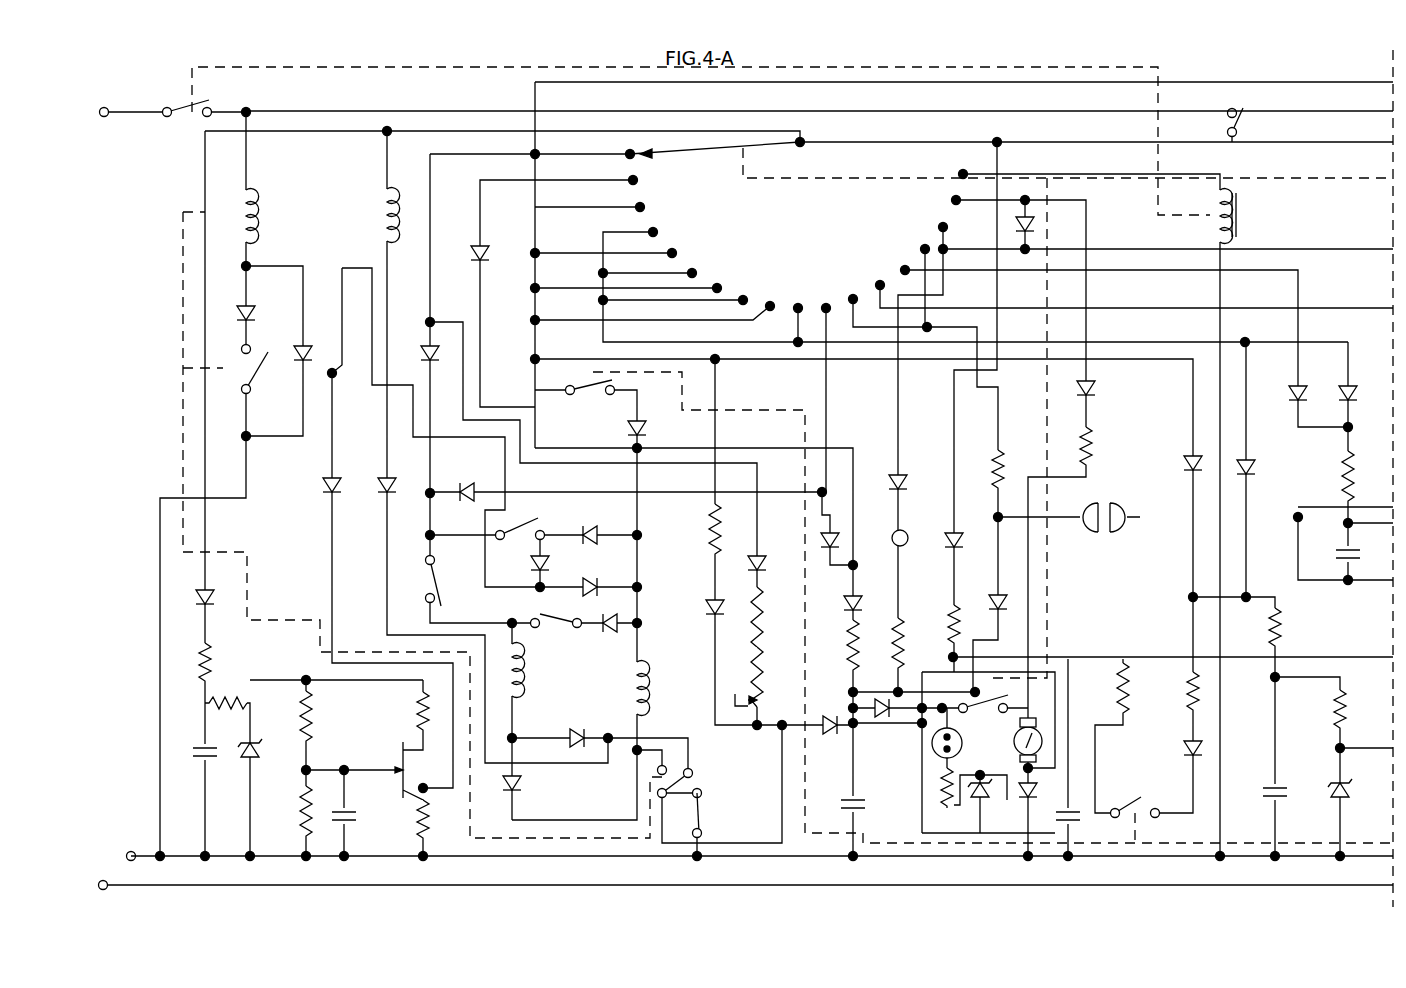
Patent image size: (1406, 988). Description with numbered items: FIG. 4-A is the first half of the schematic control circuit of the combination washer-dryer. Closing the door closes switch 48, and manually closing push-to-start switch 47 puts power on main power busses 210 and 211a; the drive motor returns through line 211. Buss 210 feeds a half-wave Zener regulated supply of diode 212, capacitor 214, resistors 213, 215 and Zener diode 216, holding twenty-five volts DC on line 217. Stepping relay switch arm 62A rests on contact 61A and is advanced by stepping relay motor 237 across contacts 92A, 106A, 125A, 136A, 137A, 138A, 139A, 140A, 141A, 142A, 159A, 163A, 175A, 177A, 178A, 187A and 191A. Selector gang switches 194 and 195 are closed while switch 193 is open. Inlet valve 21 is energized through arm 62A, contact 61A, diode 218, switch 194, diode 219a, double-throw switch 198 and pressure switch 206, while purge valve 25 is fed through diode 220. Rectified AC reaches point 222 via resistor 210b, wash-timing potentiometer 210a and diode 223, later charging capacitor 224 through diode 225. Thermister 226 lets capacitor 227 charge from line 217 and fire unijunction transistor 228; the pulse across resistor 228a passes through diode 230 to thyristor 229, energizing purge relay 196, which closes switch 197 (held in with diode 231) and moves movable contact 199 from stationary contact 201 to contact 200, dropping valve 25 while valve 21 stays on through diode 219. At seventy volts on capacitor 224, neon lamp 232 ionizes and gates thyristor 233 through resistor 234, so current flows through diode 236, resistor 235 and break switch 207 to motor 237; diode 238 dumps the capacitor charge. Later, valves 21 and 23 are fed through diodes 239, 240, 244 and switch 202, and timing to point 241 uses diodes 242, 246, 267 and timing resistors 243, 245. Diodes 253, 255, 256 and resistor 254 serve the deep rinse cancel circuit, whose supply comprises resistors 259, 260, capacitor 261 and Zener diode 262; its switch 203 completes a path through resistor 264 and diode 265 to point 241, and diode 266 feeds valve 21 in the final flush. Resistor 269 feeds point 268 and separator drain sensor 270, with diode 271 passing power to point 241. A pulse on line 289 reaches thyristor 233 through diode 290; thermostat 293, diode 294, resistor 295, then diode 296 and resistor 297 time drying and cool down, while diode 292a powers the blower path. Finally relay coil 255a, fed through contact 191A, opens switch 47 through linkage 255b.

The push-to-start switch 47 is at (175, 101).
The door switch 48 is at (1215, 125).
The inlet valve 21 is at (509, 681).
The inlet valve 23 is at (655, 680).
The purge valve 25 is at (375, 200).
The contact 61A is at (693, 146).
The stepping relay switch arm 62A is at (758, 150).
The contact 92A is at (652, 169).
The contact 106A is at (663, 191).
The contact 125A is at (673, 215).
The contact 136A is at (689, 234).
The contact 137A is at (706, 253).
The contact 138A is at (729, 268).
The contact 139A is at (753, 280).
The contact 140A is at (778, 285).
The contact 141A is at (802, 282).
The contact 142A is at (831, 282).
The contact 159A is at (858, 273).
The contact 163A is at (866, 260).
The contact 175A is at (889, 246).
The switch contact 177A is at (908, 227).
The contact 178A is at (923, 206).
The contact 187A is at (932, 186).
The contact 191A is at (939, 166).
The switch 193 is at (547, 549).
The switch 194 is at (418, 581).
The switch 195 is at (542, 611).
The purge relay 196 is at (233, 200).
The relay-operated switch 197 is at (262, 370).
The single-pole, double-throw relay operated switch 198 is at (721, 786).
The movable contact 199 is at (641, 798).
The contact 200 is at (628, 780).
The stationary contact 201 is at (710, 766).
The switch 202 is at (590, 399).
The switch 203 is at (1133, 796).
The pressure switch 206 is at (718, 815).
The stepping relay break switch 207 is at (984, 715).
The main power buss 210 is at (932, 140).
The wash-timing potentiometer 210a is at (779, 673).
The resistor 210b is at (779, 612).
The line 211 is at (580, 860).
The main power buss 211a is at (385, 111).
The diode 212 is at (190, 581).
The resistor 213 is at (189, 650).
The capacitor 214 is at (192, 737).
The resistor 215 is at (229, 687).
The Zener diode 216 is at (235, 766).
The line 217 is at (336, 666).
The diode 218 is at (414, 342).
The diode 219 is at (537, 783).
The diode 219a is at (557, 718).
The diode 220 is at (369, 468).
The point 222 is at (741, 725).
The diode 223 is at (773, 548).
The capacitor 224 is at (838, 791).
The diode 225 is at (891, 695).
The negative temperature coefficient thermister 226 is at (327, 765).
The capacitor 227 is at (359, 826).
The unijunction transistor 228 is at (390, 732).
The resistor 228a is at (430, 858).
The thyristor 229 is at (287, 341).
The diode 230 is at (322, 490).
The diode 231 is at (232, 297).
The neon lamp 232 is at (914, 752).
The thyristor 233 is at (1012, 808).
The resistor 234 is at (914, 788).
The resistor 235 is at (933, 617).
The diode 236 is at (934, 524).
The stepping relay motor 237 is at (1006, 742).
The diode 238 is at (881, 725).
The diode 239 is at (497, 237).
The diode 240 is at (606, 637).
The point 241 is at (828, 741).
The diode 242 is at (837, 592).
The timing resistor 243 is at (836, 645).
The diode 244 is at (606, 428).
The timing resistor 245 is at (688, 531).
The diode 246 is at (695, 593).
The diode 253 is at (1364, 377).
The resistor 254 is at (1340, 470).
The diode 255 is at (1182, 463).
The relay coil 255a is at (1253, 216).
The linkage 255b is at (260, 66).
The diode 256 is at (1255, 470).
The resistor 259 is at (1282, 632).
The resistor 260 is at (1333, 718).
The capacitor 261 is at (1268, 786).
The Zener diode 262 is at (1330, 786).
The resistor 264 is at (1169, 703).
The diode 265 is at (1183, 750).
The diode 266 is at (466, 475).
The diode 267 is at (857, 528).
The point 268 is at (1019, 506).
The resistor 269 is at (981, 457).
The separator drain sensor 270 is at (1110, 528).
The diode 271 is at (982, 587).
The line 289 is at (980, 835).
The diode 290 is at (962, 806).
The diode 292a is at (1036, 227).
The thermostat 293 is at (884, 548).
The diode 294 is at (882, 467).
The resistor 295 is at (882, 644).
The diode 296 is at (1096, 385).
The resistor 297 is at (1109, 447).